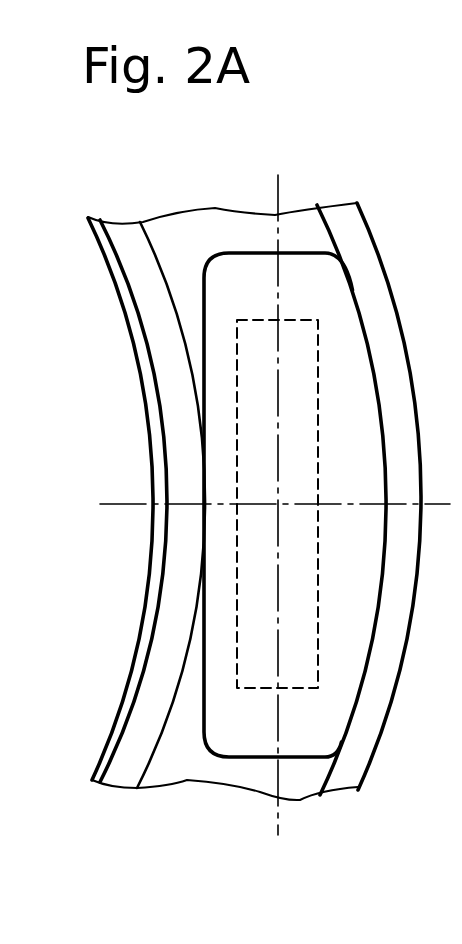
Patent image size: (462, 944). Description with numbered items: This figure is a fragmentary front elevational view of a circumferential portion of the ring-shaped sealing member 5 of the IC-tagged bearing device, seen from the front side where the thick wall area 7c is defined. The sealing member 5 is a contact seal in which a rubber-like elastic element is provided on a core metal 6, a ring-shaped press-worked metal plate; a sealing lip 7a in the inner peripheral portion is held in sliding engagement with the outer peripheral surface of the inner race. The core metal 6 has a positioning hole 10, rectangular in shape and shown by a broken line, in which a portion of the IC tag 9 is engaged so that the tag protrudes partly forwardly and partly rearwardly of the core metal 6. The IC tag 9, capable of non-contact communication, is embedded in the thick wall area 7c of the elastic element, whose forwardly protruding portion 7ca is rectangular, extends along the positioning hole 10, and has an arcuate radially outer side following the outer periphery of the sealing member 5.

The sealing member 5 is at (390, 247).
The core metal 6 is at (300, 775).
The sealing lip 7a is at (157, 695).
The thick wall area 7c is at (233, 288).
The forwardly protruding portion 7ca is at (217, 433).
The IC tag 9 is at (278, 560).
The positioning hole 10 is at (318, 393).